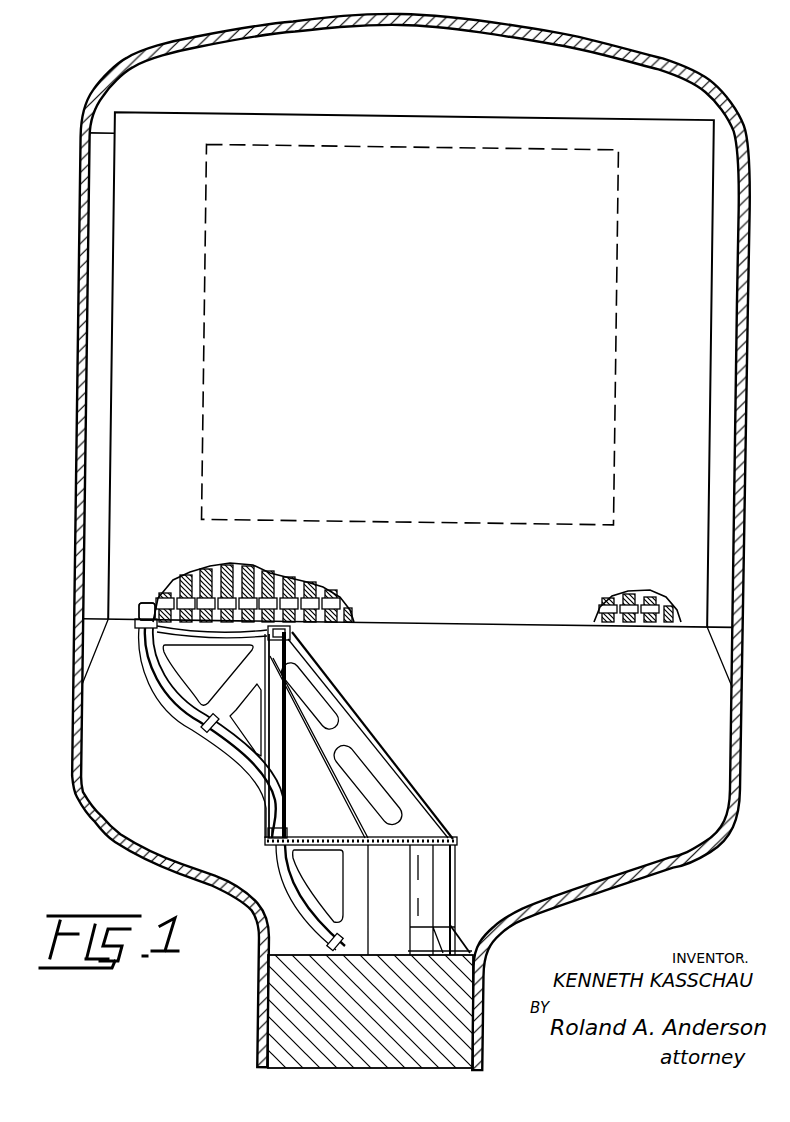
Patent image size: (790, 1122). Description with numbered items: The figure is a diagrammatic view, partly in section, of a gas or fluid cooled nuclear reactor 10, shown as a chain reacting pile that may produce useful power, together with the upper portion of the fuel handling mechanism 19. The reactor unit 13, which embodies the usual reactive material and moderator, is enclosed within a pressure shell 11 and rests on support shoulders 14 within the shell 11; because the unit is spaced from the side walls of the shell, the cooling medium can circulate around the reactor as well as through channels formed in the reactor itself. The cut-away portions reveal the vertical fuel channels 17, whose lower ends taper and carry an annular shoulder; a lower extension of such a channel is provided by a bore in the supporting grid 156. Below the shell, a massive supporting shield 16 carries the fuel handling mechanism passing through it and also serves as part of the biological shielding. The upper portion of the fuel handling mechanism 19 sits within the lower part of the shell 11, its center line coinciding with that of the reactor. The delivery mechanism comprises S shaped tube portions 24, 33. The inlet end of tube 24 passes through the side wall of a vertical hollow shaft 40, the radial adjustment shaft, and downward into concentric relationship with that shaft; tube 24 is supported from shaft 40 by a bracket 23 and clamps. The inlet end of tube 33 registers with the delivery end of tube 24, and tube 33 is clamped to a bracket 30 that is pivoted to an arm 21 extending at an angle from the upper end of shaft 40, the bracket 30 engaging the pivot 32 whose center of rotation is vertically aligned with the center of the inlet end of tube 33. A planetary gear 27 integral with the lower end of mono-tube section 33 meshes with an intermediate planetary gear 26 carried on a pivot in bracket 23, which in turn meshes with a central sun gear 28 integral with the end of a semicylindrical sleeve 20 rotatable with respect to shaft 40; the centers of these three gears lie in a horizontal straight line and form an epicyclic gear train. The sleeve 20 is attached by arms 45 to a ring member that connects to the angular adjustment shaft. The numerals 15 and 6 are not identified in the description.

The nuclear reactor 10 is at (712, 63).
The pressure shell 11 is at (734, 710).
The reactor unit 13 is at (470, 113).
The support shoulders 14 is at (93, 647).
The pile of articles 15 is at (152, 600).
The fitting 6 is at (134, 604).
The supporting grid 156 is at (141, 592).
The supporting shield 16 is at (467, 935).
The fuel channels 17 is at (606, 631).
The upper portion of the fuel handling mechanism 19 is at (449, 792).
The semicylindrical sleeve 20 is at (456, 875).
The arm 21 is at (342, 728).
The bracket 23 is at (296, 874).
The S shaped tube portion 24 is at (273, 856).
The intermediate planetary gear 26 is at (298, 836).
The planetary gear 27 is at (266, 836).
The sun gear 28 is at (456, 840).
The bracket 30 is at (224, 689).
The pivot 32 is at (293, 631).
The S shaped tube portion 33 is at (172, 705).
The hollow shaft 40 is at (375, 927).
The arms 45 is at (470, 950).